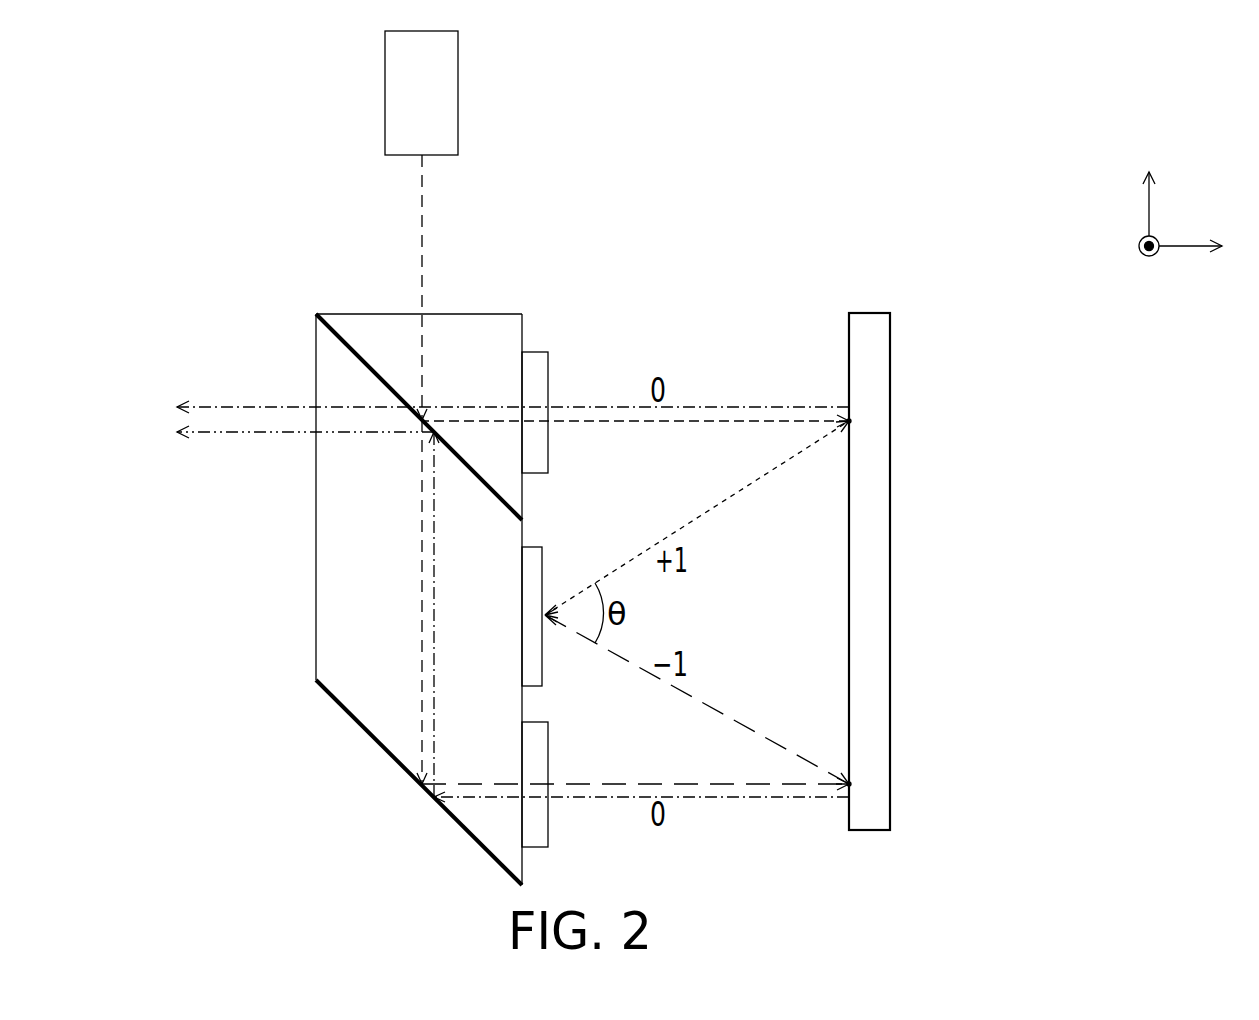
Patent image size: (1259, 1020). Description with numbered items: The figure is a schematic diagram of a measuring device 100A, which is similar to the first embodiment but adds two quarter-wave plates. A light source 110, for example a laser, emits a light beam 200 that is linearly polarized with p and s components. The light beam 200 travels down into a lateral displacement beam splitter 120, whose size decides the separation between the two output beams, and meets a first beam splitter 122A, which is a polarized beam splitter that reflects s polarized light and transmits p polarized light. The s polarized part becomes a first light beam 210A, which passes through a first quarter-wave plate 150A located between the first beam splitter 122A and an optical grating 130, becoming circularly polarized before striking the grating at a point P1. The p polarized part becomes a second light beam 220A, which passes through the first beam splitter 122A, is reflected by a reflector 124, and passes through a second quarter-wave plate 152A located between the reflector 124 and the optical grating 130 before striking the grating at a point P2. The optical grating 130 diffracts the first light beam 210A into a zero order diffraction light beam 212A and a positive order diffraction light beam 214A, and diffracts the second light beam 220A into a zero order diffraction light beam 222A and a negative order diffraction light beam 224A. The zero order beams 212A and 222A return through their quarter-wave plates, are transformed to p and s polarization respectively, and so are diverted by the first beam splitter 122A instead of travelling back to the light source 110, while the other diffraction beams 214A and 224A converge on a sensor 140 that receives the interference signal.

The measuring device 100A is at (1018, 888).
The light source 110 is at (392, 95).
The light beam 200 is at (418, 227).
The lateral displacement beam splitter 120 is at (318, 552).
The first beam splitter 122A is at (350, 354).
The reflector 124 is at (468, 829).
The optical grating 130 is at (886, 567).
The sensor 140 is at (536, 556).
The first quarter-wave plate 150A is at (537, 363).
The second quarter-wave plate 152A is at (537, 833).
The first light beam 210A is at (629, 423).
The zero order diffraction light beam 212A is at (702, 406).
The diffraction light beam 214A is at (745, 488).
The second light beam 220A is at (624, 782).
The zero order diffraction light beam 222A is at (729, 799).
The diffraction light beam 224A is at (734, 712).
The first point on screen P1 is at (852, 421).
The second point on screen P2 is at (852, 784).